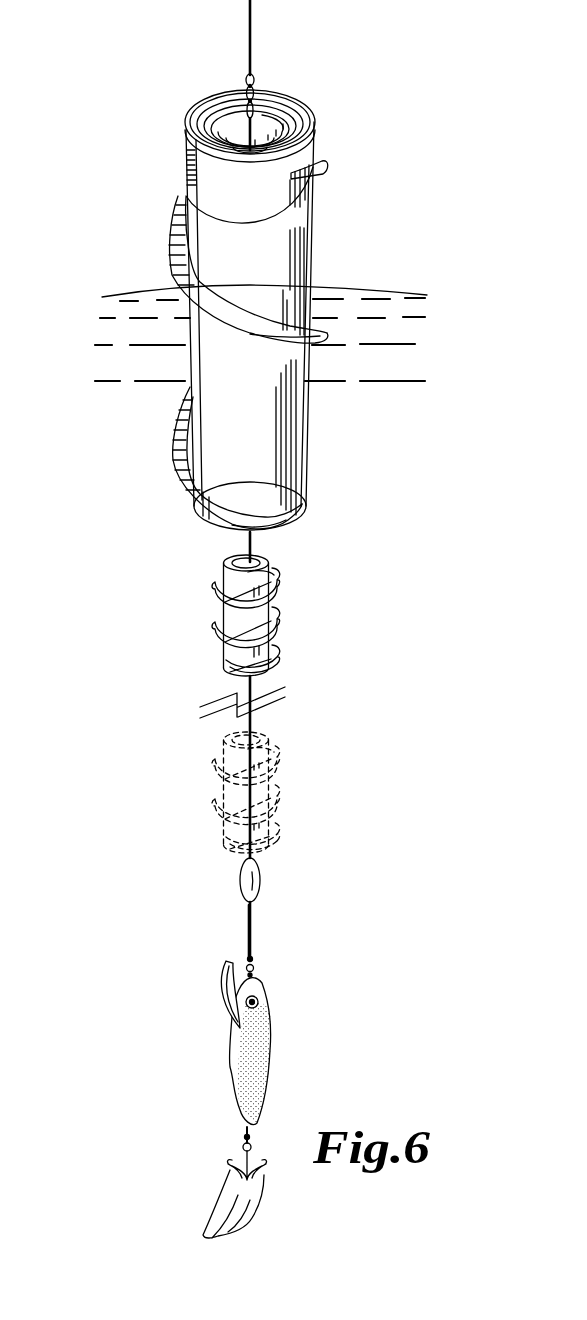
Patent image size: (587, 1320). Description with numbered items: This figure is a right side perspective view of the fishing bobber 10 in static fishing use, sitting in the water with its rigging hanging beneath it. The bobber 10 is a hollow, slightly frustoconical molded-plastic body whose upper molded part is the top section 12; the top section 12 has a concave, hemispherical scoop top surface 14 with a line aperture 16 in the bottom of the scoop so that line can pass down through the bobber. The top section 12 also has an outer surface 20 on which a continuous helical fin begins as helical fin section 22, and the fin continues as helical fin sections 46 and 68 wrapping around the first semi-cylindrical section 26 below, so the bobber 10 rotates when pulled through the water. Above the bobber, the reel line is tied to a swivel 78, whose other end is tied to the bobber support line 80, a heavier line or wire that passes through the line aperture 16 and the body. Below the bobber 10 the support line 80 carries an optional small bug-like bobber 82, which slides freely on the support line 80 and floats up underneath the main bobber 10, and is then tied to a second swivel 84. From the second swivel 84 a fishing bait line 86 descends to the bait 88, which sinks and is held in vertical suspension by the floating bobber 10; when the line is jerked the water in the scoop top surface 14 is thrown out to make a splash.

The fishing bobber 10 is at (370, 235).
The top section 12 is at (182, 137).
The scoop top surface 14 is at (223, 107).
The line aperture 16 is at (256, 40).
The outer surface 20 is at (202, 177).
The helical fin section 22 is at (318, 157).
The first semi-cylindrical section 26 is at (237, 422).
The helical fin section 46 is at (202, 238).
The helical fin section 68 is at (168, 243).
The swivel 78 is at (258, 82).
The bobber support line 80 is at (247, 152).
The bug-like bobber 82 is at (272, 598).
The second swivel 84 is at (263, 880).
The fishing bait line 86 is at (254, 935).
The bait 88 is at (268, 1018).